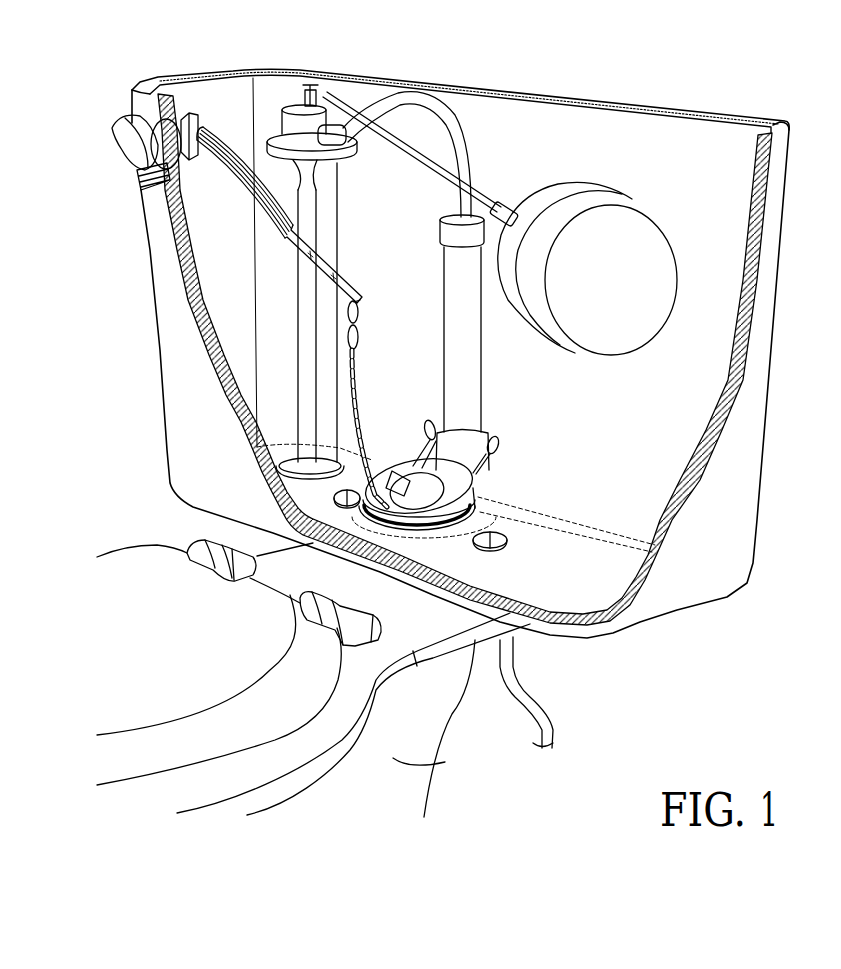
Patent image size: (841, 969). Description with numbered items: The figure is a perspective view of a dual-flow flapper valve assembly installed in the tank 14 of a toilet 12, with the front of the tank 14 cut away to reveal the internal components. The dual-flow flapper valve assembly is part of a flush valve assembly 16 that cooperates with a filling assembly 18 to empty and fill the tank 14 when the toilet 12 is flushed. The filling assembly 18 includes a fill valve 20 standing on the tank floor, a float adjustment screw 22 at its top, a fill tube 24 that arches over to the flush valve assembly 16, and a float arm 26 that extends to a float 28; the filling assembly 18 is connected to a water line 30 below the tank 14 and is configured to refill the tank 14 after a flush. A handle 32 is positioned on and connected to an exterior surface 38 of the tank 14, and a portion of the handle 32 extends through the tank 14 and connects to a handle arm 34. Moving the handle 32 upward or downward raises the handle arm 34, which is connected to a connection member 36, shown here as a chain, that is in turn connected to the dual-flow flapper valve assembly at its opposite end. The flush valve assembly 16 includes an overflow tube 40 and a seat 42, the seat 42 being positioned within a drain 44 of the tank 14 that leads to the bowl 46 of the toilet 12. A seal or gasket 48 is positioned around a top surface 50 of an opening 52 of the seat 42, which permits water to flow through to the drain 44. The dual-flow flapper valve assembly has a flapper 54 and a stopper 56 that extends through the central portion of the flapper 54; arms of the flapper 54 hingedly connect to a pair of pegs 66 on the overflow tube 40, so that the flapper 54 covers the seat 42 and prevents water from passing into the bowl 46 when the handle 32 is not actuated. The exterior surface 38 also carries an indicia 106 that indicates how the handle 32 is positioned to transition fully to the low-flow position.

The toilet 12 is at (704, 684).
The tank 14 is at (765, 412).
The flush valve assembly 16 is at (512, 442).
The filling assembly 18 is at (397, 62).
The fill valve 20 is at (264, 103).
The float adjustment screw 22 is at (312, 85).
The fill tube 24 is at (435, 93).
The float arm 26 is at (432, 150).
The float 28 is at (615, 195).
The water line 30 is at (549, 680).
The handle 32 is at (103, 151).
The handle arm 34 is at (230, 168).
The connection member 36 is at (372, 383).
The exterior surface 38 is at (229, 460).
The overflow tube 40 is at (424, 256).
The seat 42 is at (480, 500).
The drain 44 is at (443, 540).
The bowl 46 is at (447, 761).
The seal or gasket 48 is at (470, 510).
The top surface 50 is at (507, 535).
The opening 52 is at (396, 566).
The flapper 54 is at (480, 497).
The stopper 56 is at (420, 477).
The pegs 66 is at (493, 438).
The indicia 106 is at (140, 182).